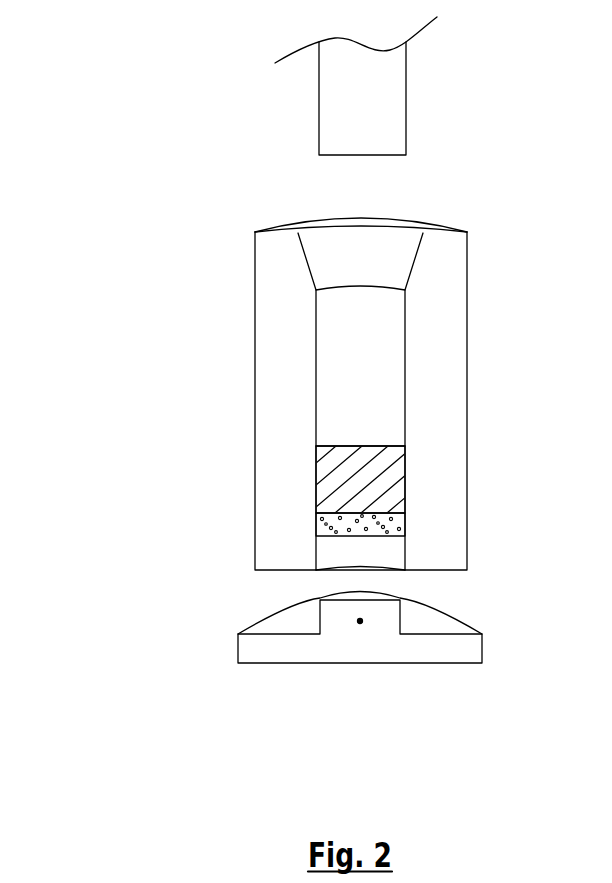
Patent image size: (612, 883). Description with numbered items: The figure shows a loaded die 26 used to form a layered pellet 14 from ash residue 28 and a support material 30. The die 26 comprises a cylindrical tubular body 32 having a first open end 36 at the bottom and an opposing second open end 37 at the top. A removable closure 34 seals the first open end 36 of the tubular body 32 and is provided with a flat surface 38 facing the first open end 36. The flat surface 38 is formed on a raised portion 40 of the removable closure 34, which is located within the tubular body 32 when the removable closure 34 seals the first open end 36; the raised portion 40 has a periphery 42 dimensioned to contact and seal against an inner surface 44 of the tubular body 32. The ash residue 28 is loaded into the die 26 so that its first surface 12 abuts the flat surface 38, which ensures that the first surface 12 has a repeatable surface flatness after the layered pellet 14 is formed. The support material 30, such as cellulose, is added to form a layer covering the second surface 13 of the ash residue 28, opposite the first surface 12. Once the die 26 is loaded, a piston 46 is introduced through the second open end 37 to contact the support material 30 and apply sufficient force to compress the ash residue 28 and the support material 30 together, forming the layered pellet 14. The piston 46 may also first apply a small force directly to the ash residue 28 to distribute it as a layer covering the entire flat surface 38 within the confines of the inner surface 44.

The piston 46 is at (352, 97).
The second open end 37 is at (365, 222).
The cylindrical tubular body 32 is at (278, 369).
The inner surface 44 is at (405, 368).
The die 26 is at (182, 180).
The layered pellet 14 is at (212, 440).
The support material 30 is at (322, 452).
The ash residue 28 is at (316, 527).
The second surface 13 is at (406, 521).
The first surface 12 is at (403, 524).
The flat surface 38 is at (357, 593).
The first open end 36 is at (366, 571).
The removable closure 34 is at (240, 647).
The raised portion 40 is at (363, 626).
The periphery 42 is at (401, 622).